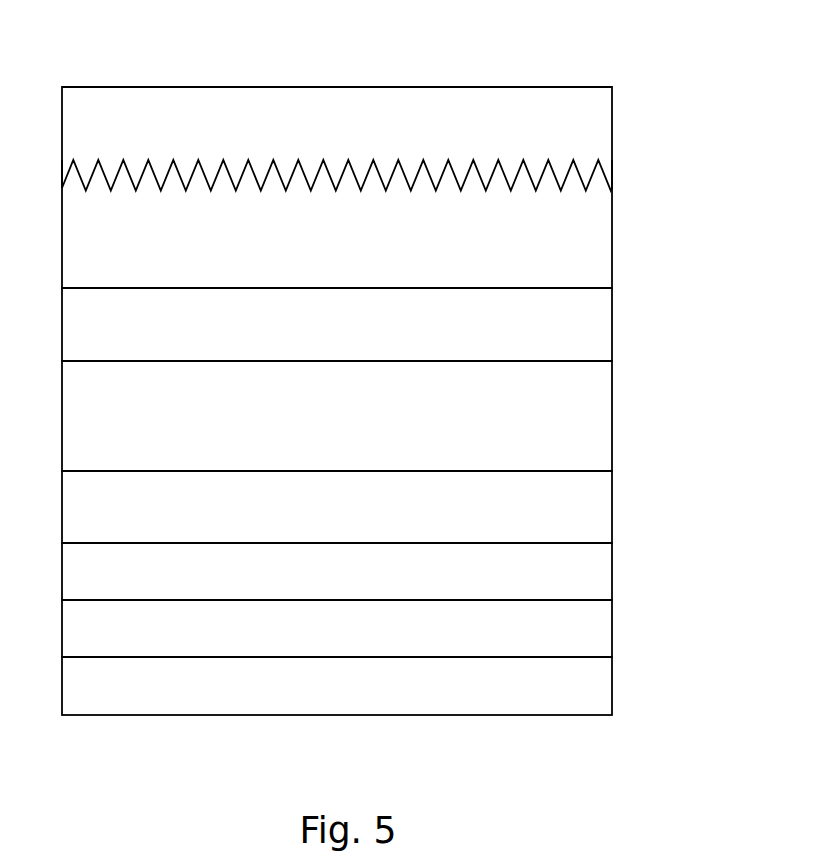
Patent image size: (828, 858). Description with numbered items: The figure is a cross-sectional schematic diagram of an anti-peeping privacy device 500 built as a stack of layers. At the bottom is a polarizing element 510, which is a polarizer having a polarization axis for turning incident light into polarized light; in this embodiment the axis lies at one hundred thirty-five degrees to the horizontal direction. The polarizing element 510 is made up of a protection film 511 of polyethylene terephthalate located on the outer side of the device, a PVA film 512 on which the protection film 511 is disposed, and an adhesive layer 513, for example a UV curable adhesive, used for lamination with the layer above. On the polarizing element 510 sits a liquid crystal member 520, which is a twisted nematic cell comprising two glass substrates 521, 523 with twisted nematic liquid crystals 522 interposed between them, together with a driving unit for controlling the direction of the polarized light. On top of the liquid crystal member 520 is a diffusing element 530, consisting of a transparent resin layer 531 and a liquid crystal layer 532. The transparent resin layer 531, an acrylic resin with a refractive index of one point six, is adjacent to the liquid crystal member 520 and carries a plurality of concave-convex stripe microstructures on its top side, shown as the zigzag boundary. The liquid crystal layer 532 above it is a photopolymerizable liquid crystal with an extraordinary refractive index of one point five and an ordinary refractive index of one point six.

The anti-peeping privacy device 500 is at (53, 52).
The polarizing element 510 is at (630, 543).
The protection film 511 is at (337, 686).
The PVA film 512 is at (337, 628).
The adhesive layer 513 is at (337, 571).
The liquid crystal member 520 is at (630, 288).
The glass substrate 521 is at (337, 507).
The twisted nematic liquid crystals 522 is at (337, 416).
The glass substrate 523 is at (337, 324).
The diffusing element 530 is at (630, 87).
The transparent resin layer 531 is at (337, 224).
The liquid crystal layer 532 is at (337, 137).